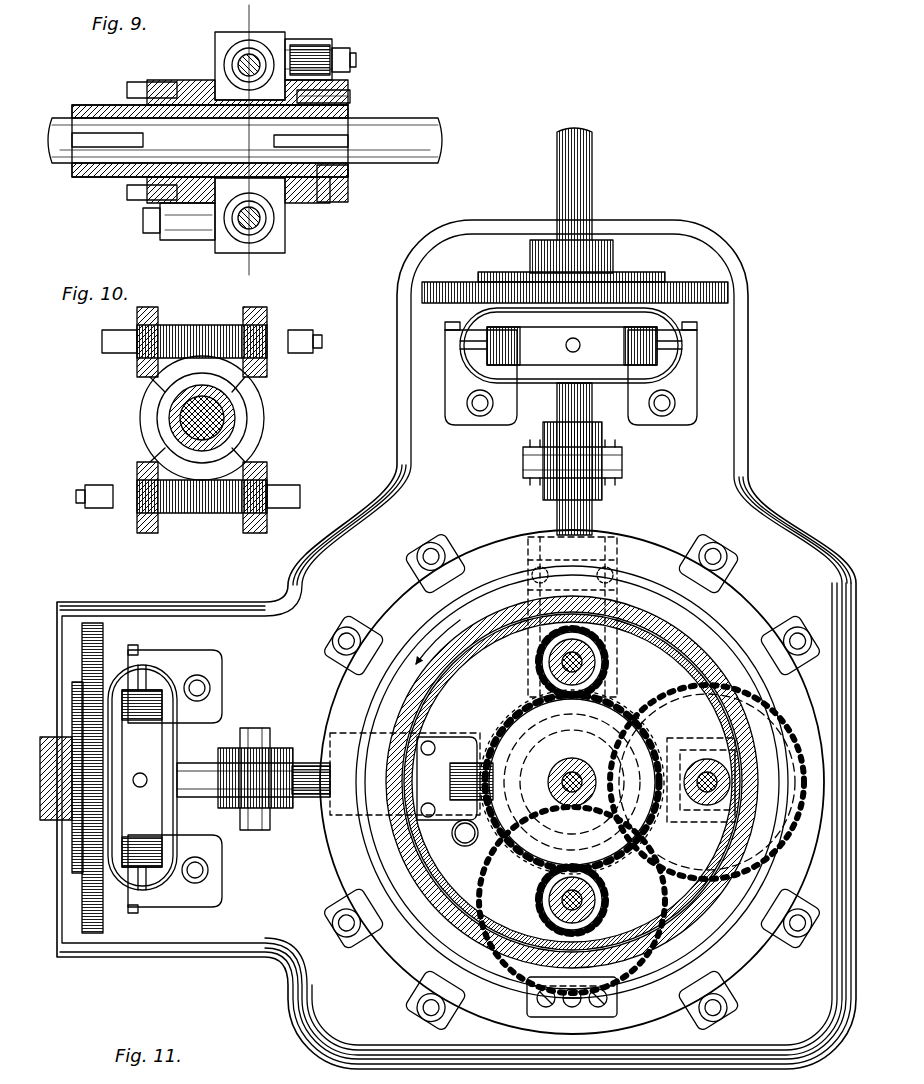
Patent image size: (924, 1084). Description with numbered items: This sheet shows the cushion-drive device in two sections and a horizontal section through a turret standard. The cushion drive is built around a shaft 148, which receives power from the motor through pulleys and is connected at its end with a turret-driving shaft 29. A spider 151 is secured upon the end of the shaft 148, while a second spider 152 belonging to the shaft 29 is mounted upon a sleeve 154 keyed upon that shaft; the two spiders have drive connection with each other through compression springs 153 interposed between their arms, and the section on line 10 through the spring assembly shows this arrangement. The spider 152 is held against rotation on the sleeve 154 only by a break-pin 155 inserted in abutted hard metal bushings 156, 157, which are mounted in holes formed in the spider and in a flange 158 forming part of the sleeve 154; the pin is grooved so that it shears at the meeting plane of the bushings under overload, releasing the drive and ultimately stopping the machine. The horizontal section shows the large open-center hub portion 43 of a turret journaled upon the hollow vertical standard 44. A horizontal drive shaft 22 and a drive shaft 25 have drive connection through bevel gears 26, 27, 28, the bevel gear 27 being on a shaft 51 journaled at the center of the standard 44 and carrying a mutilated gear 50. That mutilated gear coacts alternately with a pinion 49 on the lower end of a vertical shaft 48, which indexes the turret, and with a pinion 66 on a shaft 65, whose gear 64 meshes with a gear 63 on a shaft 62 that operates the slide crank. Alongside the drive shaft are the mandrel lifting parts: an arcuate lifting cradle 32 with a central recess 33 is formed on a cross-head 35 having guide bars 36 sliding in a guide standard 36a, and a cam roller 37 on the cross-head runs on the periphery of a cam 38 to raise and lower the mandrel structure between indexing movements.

In FIG. 9, the section line 10- 10 is at (260, 13).
In FIG. 11, the drive shaft 22 is at (594, 196).
In FIG. 11, the drive shaft 25 is at (200, 798).
In FIG. 11, the bevel gear 26 is at (612, 702).
In FIG. 11, the bevel gear 27 is at (603, 868).
In FIG. 11, the bevel gear 28 is at (662, 740).
In FIG. 9, the shaft 29 is at (414, 120).
In FIG. 10, the shaft 29 is at (213, 427).
In FIG. 11, the lifting cradle 32 is at (150, 742).
In FIG. 11, the recess 33 is at (570, 385).
In FIG. 11, the cross-head 35 is at (687, 360).
In FIG. 11, the guide bars 36 is at (663, 337).
In FIG. 11, the guide standard 36a is at (675, 373).
In FIG. 11, the cam roller 37 is at (600, 280).
In FIG. 11, the cam 38 is at (673, 290).
In FIG. 11, the hub portion 43 is at (480, 612).
In FIG. 11, the standard 44 is at (405, 706).
In FIG. 11, the vertical shaft 48 is at (563, 658).
In FIG. 11, the pinion 49 is at (548, 672).
In FIG. 11, the mutilated gear 50 is at (503, 722).
In FIG. 11, the shaft 51 is at (575, 762).
In FIG. 11, the shaft 62 is at (705, 800).
In FIG. 11, the gear 63 is at (647, 710).
In FIG. 11, the gear 64 is at (490, 868).
In FIG. 11, the shaft 65 is at (594, 898).
In FIG. 11, the pinion 66 is at (547, 888).
In FIG. 9, the shaft 148 is at (60, 120).
In FIG. 9, the spider 151 is at (180, 217).
In FIG. 10, the spider 151 is at (140, 370).
In FIG. 9, the spider 152 is at (302, 42).
In FIG. 10, the spider 152 is at (250, 370).
In FIG. 9, the compression springs 153 is at (265, 225).
In FIG. 10, the compression springs 153 is at (203, 320).
In FIG. 9, the sleeve 154 is at (347, 110).
In FIG. 10, the sleeve 154 is at (233, 412).
In FIG. 9, the break-pin 155 is at (335, 93).
In FIG. 9, the hard metal bushing 156 is at (305, 90).
In FIG. 9, the hard metal bushing 157 is at (335, 48).
In FIG. 9, the flange 158 is at (342, 187).